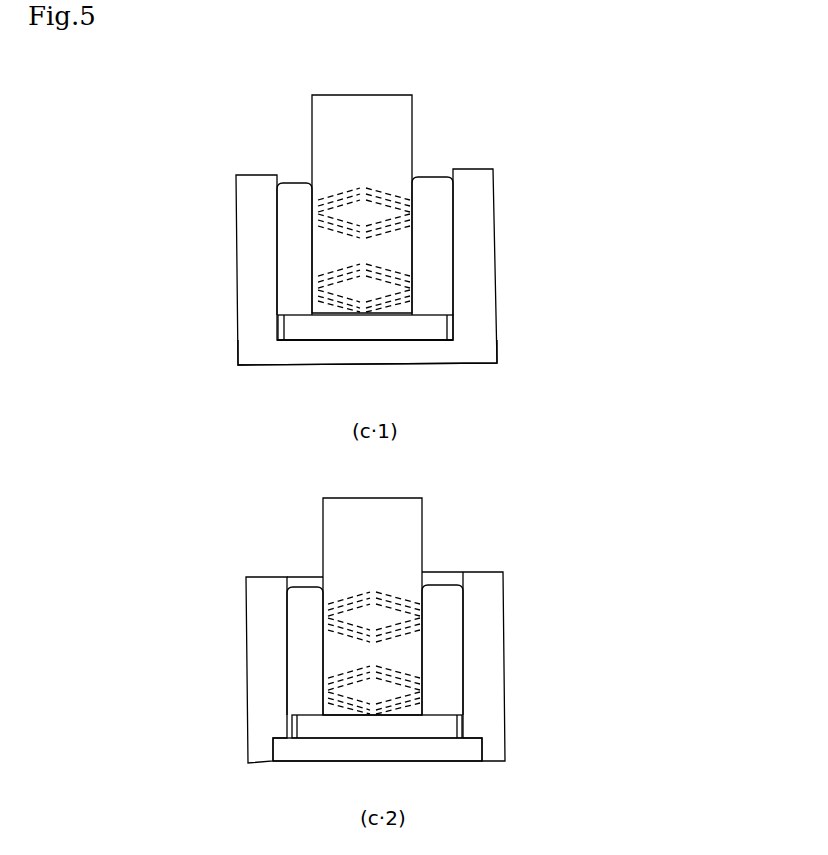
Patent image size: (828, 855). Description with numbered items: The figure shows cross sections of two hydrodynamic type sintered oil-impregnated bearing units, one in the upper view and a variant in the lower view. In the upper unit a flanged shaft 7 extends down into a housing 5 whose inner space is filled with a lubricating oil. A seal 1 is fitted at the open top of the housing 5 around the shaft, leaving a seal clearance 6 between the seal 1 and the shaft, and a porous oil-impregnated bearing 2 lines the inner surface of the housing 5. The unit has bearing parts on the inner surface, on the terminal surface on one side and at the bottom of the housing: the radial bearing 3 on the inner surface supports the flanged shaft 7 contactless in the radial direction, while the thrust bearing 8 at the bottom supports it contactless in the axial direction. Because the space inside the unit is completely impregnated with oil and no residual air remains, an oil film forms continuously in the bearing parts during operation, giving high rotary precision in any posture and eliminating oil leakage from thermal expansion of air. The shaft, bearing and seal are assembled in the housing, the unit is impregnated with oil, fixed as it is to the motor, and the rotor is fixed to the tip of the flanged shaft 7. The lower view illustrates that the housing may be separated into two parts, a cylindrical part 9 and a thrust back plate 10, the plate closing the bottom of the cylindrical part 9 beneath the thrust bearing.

The seal 1 is at (290, 170).
The porous oil-impregnated bearing 2 is at (440, 195).
The radial bearing 3 is at (415, 212).
The housing 5 is at (265, 340).
The seal clearance 6 is at (415, 165).
The flanged shaft 7 is at (335, 248).
The thrust bearing 8 is at (298, 338).
The cylindrical part of housing 9 is at (272, 662).
The thrust back plate 10 is at (422, 753).